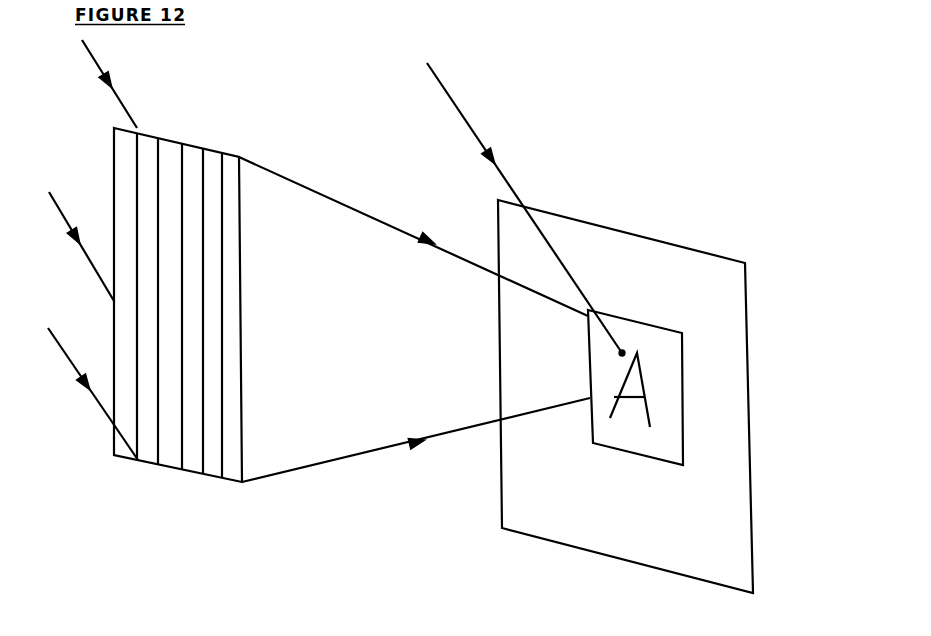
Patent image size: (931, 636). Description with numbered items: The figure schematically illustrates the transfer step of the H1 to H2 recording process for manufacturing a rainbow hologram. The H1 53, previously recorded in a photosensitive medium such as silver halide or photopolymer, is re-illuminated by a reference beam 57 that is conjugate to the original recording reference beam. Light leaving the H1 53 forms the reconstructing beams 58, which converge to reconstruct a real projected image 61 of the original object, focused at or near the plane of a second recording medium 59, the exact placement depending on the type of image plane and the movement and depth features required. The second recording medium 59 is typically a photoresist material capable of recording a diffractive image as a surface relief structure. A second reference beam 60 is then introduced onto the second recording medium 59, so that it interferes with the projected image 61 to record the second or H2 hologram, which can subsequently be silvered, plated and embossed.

The H1 hologram 53 is at (182, 321).
The reference beam 57 is at (92, 250).
The diffracted output beams 58 is at (414, 319).
The second recording medium 59 is at (643, 396).
The second reference beam 60 is at (526, 209).
The real projected image 61 is at (637, 370).